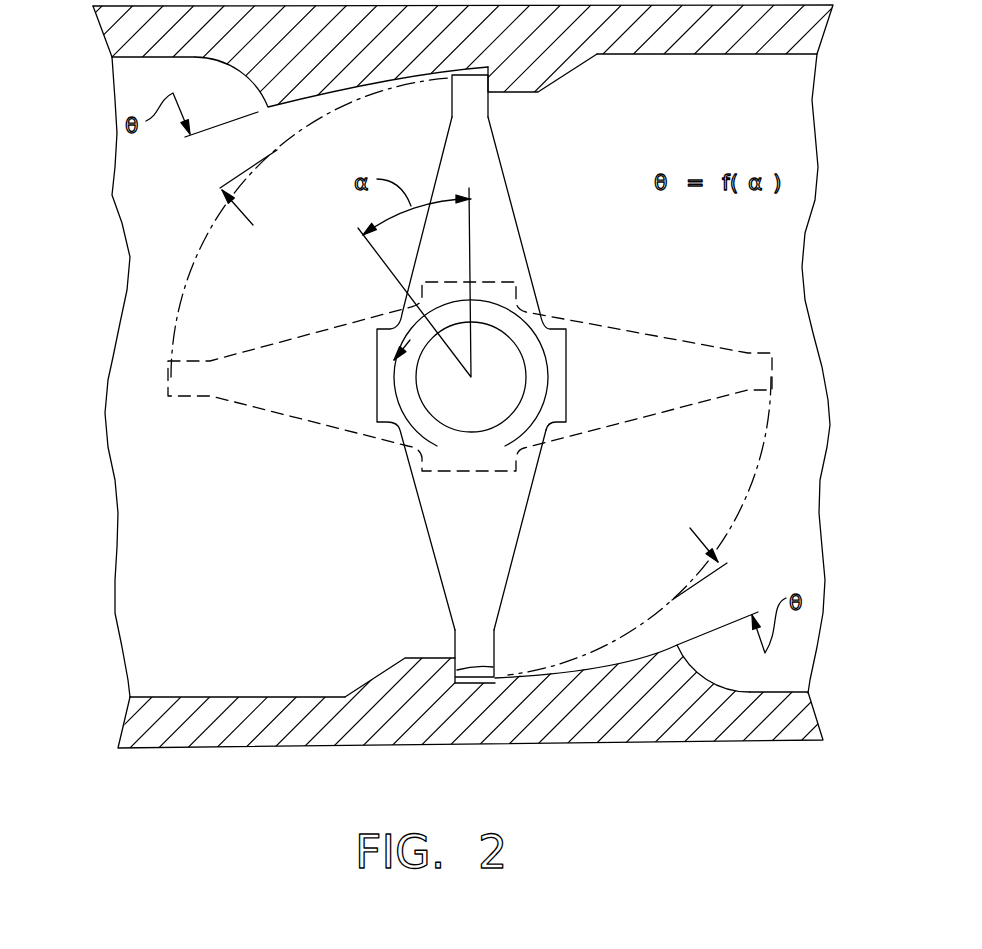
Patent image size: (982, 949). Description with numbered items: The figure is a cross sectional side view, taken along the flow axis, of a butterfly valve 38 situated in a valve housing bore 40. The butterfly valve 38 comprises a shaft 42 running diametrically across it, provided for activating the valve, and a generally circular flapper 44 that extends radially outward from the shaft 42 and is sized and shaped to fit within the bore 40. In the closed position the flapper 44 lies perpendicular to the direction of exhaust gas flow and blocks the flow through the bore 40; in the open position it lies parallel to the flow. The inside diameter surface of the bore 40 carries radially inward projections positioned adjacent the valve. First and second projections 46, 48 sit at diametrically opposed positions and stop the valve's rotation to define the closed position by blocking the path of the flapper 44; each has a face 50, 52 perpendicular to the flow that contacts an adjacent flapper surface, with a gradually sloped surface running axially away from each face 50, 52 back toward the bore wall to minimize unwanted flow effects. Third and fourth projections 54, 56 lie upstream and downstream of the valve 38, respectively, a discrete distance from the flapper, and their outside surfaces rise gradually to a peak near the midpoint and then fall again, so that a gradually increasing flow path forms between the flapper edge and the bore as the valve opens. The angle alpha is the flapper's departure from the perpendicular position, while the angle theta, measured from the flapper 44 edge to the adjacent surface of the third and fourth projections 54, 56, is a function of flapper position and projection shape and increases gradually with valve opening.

The butterfly valve 38 is at (470, 379).
The valve housing bore 40 is at (752, 90).
The shaft 42 is at (547, 372).
The flapper 44 is at (502, 575).
The first projection 46 is at (373, 672).
The second projection 48 is at (572, 75).
The face of first projection 50 is at (494, 667).
The face of second projection 52 is at (487, 88).
The third projection 54 is at (720, 684).
The fourth projection 56 is at (230, 68).